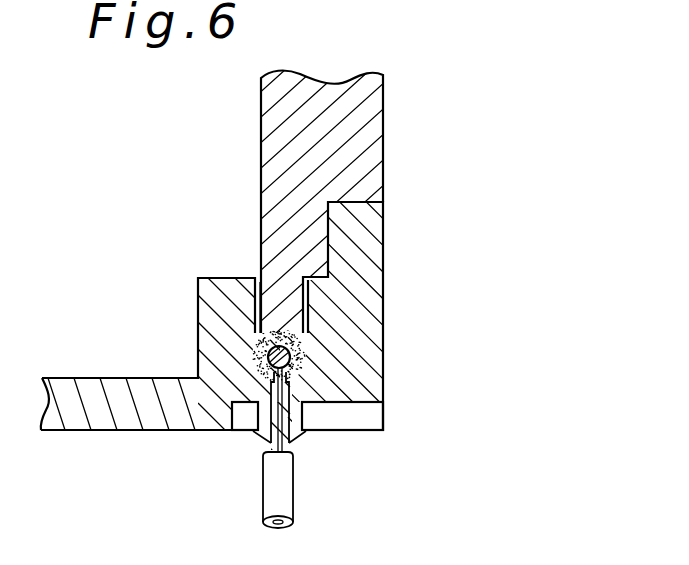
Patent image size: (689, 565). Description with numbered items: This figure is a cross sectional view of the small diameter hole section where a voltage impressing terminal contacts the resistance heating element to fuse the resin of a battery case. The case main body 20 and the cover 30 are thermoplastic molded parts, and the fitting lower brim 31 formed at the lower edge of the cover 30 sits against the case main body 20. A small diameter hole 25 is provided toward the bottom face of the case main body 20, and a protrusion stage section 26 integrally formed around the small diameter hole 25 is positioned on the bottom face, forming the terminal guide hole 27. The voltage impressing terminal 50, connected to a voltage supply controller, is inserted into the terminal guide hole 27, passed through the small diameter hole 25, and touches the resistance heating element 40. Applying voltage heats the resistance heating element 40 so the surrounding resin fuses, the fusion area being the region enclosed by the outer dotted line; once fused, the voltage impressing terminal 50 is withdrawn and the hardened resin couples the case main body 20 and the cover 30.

The case main body 20 is at (383, 291).
The small diameter hole 25 is at (287, 390).
The protrusion stage section 26 is at (305, 443).
The terminal guide hole 27 is at (258, 437).
The cover 30 is at (383, 135).
The fitting lower brim 31 is at (257, 277).
The resistance heating element 40 is at (264, 357).
The voltage impressing terminal 50 is at (288, 488).